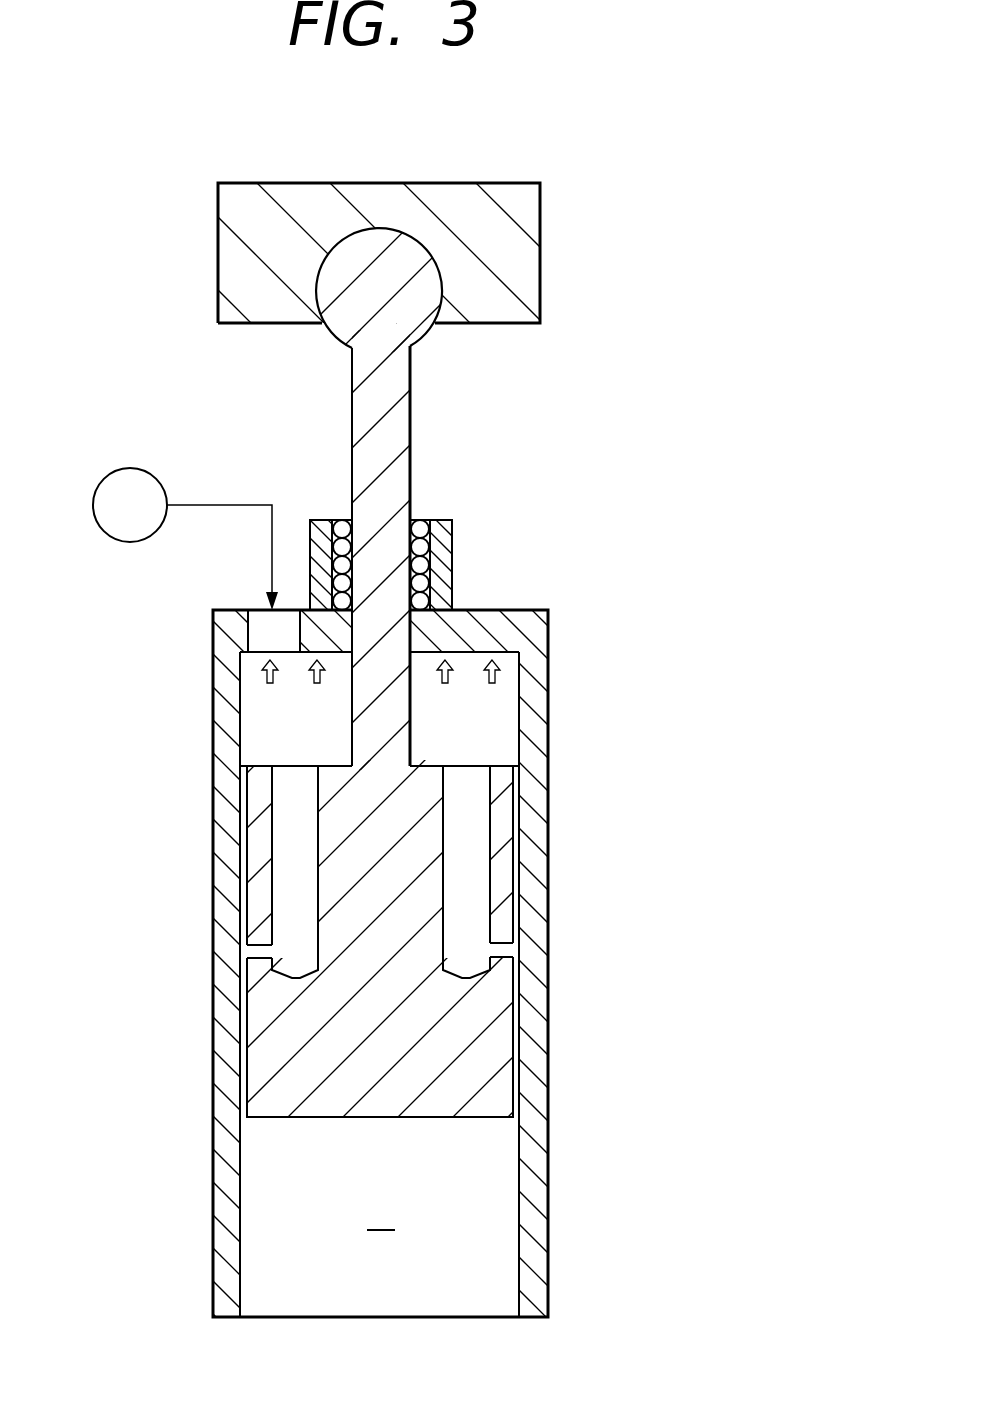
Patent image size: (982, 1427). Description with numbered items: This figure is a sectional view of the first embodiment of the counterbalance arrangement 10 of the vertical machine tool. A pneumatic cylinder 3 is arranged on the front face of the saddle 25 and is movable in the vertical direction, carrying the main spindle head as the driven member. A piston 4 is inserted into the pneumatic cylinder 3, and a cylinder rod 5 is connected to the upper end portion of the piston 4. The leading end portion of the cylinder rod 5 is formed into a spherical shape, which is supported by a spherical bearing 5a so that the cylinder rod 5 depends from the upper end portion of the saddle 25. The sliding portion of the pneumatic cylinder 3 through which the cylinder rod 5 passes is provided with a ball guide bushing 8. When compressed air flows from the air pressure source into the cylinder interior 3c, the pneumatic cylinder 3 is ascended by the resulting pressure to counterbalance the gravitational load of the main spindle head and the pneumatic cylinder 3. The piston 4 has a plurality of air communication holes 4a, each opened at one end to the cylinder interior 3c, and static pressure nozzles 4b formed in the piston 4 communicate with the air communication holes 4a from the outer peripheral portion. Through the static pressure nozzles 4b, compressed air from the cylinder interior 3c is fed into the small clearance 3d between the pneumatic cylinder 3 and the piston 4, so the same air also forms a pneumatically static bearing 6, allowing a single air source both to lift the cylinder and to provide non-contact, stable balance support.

The damping force control apparatus 10 is at (660, 395).
The saddle 25 is at (527, 208).
The spherical bearing 5a is at (440, 285).
The cylinder rod 5 is at (415, 468).
The ball guide bushing 8 is at (418, 547).
The pneumatic cylinder 3 is at (545, 628).
The cylinder interior 3c is at (483, 733).
The small clearance 3d is at (521, 1087).
The piston 4 is at (502, 817).
The air communication holes 4a is at (290, 847).
The static pressure nozzles 4b is at (253, 952).
The pneumatically static bearing 6 is at (521, 1023).